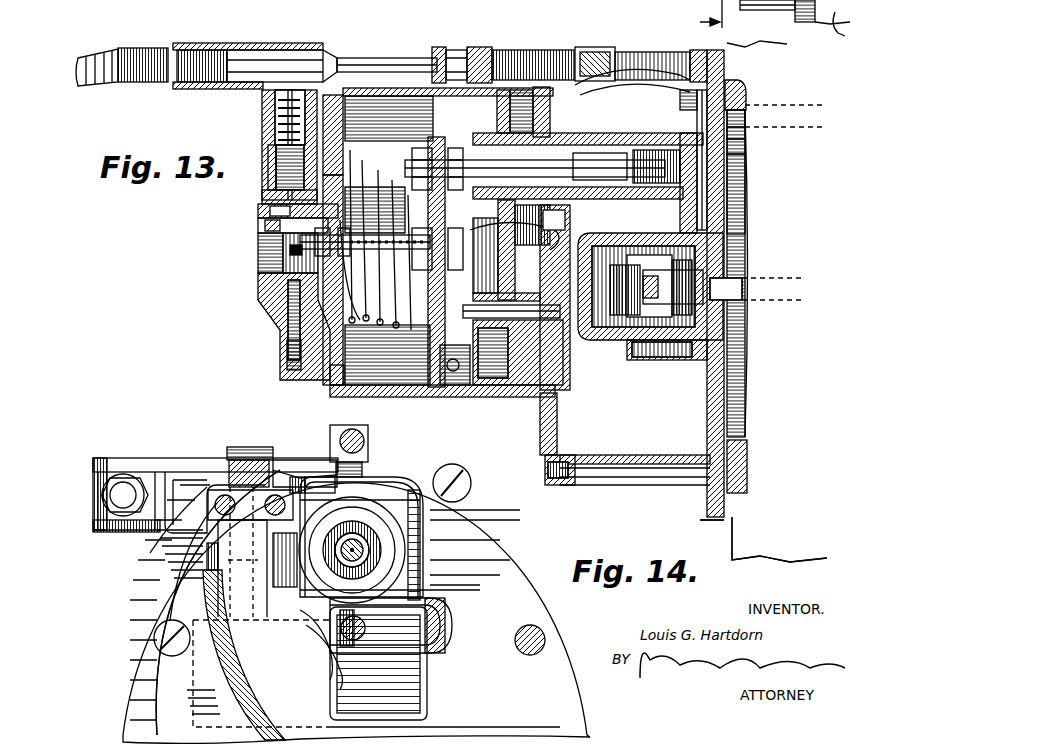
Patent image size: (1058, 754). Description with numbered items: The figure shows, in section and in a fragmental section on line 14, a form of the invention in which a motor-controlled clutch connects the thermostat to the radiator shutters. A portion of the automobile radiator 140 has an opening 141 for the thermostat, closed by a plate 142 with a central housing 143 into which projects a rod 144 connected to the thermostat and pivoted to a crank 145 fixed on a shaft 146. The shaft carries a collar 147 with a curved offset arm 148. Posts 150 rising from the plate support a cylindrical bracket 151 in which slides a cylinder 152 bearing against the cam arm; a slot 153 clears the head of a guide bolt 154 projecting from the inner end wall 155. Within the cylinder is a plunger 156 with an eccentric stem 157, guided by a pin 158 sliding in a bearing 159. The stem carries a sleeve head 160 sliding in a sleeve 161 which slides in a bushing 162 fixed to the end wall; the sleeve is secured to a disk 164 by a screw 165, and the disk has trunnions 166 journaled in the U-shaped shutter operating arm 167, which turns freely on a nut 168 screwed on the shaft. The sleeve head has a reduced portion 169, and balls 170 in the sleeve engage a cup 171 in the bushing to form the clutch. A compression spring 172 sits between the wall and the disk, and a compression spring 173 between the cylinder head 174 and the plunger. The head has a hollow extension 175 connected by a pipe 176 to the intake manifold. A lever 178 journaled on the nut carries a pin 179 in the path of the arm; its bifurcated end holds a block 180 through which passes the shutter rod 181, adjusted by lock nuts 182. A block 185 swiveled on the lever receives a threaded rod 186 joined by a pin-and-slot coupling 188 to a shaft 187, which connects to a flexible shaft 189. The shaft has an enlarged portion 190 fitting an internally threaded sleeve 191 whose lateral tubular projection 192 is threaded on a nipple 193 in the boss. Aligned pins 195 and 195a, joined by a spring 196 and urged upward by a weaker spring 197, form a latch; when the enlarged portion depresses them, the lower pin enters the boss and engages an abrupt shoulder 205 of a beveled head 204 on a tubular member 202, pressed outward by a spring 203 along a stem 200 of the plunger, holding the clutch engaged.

In FIG. 13, the section line 14 is at (747, 15).
In FIG. 13, the automobile radiator 140 is at (706, 528).
In FIG. 14, the automobile radiator 140 is at (732, 526).
In FIG. 13, the opening 141 is at (745, 428).
In FIG. 13, the plate 142 is at (725, 60).
In FIG. 14, the plate 142 is at (540, 520).
In FIG. 13, the housing 143 is at (615, 340).
In FIG. 14, the housing 143 is at (422, 710).
In FIG. 13, the rod 144 is at (745, 280).
In FIG. 13, the crank 145 is at (700, 257).
In FIG. 14, the shaft 146 is at (157, 550).
In FIG. 14, the collar 147 is at (200, 485).
In FIG. 13, the curved offset arm 148 is at (560, 300).
In FIG. 14, the curved offset arm 148 is at (452, 605).
In FIG. 13, the posts 150 is at (640, 446).
In FIG. 14, the posts 150 is at (128, 622).
In FIG. 13, the cylindrical bracket 151 is at (440, 398).
In FIG. 14, the cylindrical bracket 151 is at (148, 675).
In FIG. 13, the cylinder 152 is at (440, 390).
In FIG. 14, the cylinder 152 is at (228, 660).
In FIG. 13, the slot 153 is at (500, 270).
In FIG. 14, the slot 153 is at (320, 640).
In FIG. 13, the bolt 154 is at (610, 258).
In FIG. 14, the bolt 154 is at (362, 640).
In FIG. 13, the inner end wall 155 is at (522, 393).
In FIG. 13, the plunger 156 is at (395, 388).
In FIG. 13, the eccentric stem 157 is at (498, 62).
In FIG. 13, the pin 158 is at (540, 335).
In FIG. 13, the bearing 159 is at (530, 340).
In FIG. 13, the sleeve head 160 is at (626, 166).
In FIG. 13, the sleeve 161 is at (747, 136).
In FIG. 14, the sleeve 161 is at (370, 550).
In FIG. 13, the bushing 162 is at (520, 130).
In FIG. 13, the disk 164 is at (747, 175).
In FIG. 14, the disk 164 is at (380, 540).
In FIG. 13, the screw 165 is at (747, 152).
In FIG. 13, the trunnions 166 is at (747, 117).
In FIG. 14, the trunnions 166 is at (405, 512).
In FIG. 13, the shutter operating arm 167 is at (748, 100).
In FIG. 14, the shutter operating arm 167 is at (378, 486).
In FIG. 14, the nut 168 is at (246, 446).
In FIG. 13, the reduced portion 169 is at (560, 130).
In FIG. 13, the balls 170 is at (540, 120).
In FIG. 13, the cup 171 is at (535, 169).
In FIG. 13, the compression spring 172 is at (707, 205).
In FIG. 14, the compression spring 172 is at (420, 560).
In FIG. 13, the compression spring 173 is at (389, 240).
In FIG. 13, the cylinder head 174 is at (328, 368).
In FIG. 13, the hollow extension 175 is at (262, 222).
In FIG. 13, the pipe 176 is at (287, 355).
In FIG. 13, the lever 178 is at (747, 92).
In FIG. 14, the lever 178 is at (288, 458).
In FIG. 14, the pin 179 is at (308, 476).
In FIG. 14, the block 180 is at (150, 462).
In FIG. 14, the rod 181 is at (122, 482).
In FIG. 14, the lock nuts 182 is at (100, 490).
In FIG. 13, the block 185 is at (580, 48).
In FIG. 14, the block 185 is at (368, 450).
In FIG. 13, the rod 186 is at (640, 78).
In FIG. 14, the rod 186 is at (364, 438).
In FIG. 13, the shaft 187 is at (388, 58).
In FIG. 13, the pin-and-slot coupling 188 is at (470, 48).
In FIG. 13, the flexible shaft 189 is at (86, 82).
In FIG. 13, the enlarged portion 190 is at (262, 55).
In FIG. 13, the internally threaded sleeve 191 is at (210, 84).
In FIG. 13, the lateral tubular projection 192 is at (276, 142).
In FIG. 13, the nipple 193 is at (265, 192).
In FIG. 13, the pin 195 is at (275, 94).
In FIG. 13, the pin 195a is at (270, 245).
In FIG. 13, the spring 196 is at (276, 128).
In FIG. 13, the spring 197 is at (270, 172).
In FIG. 13, the stem 200 is at (365, 277).
In FIG. 13, the tubular member 202 is at (260, 210).
In FIG. 13, the spring 203 is at (445, 350).
In FIG. 13, the head 204 is at (280, 250).
In FIG. 13, the abrupt shoulder 205 is at (262, 290).